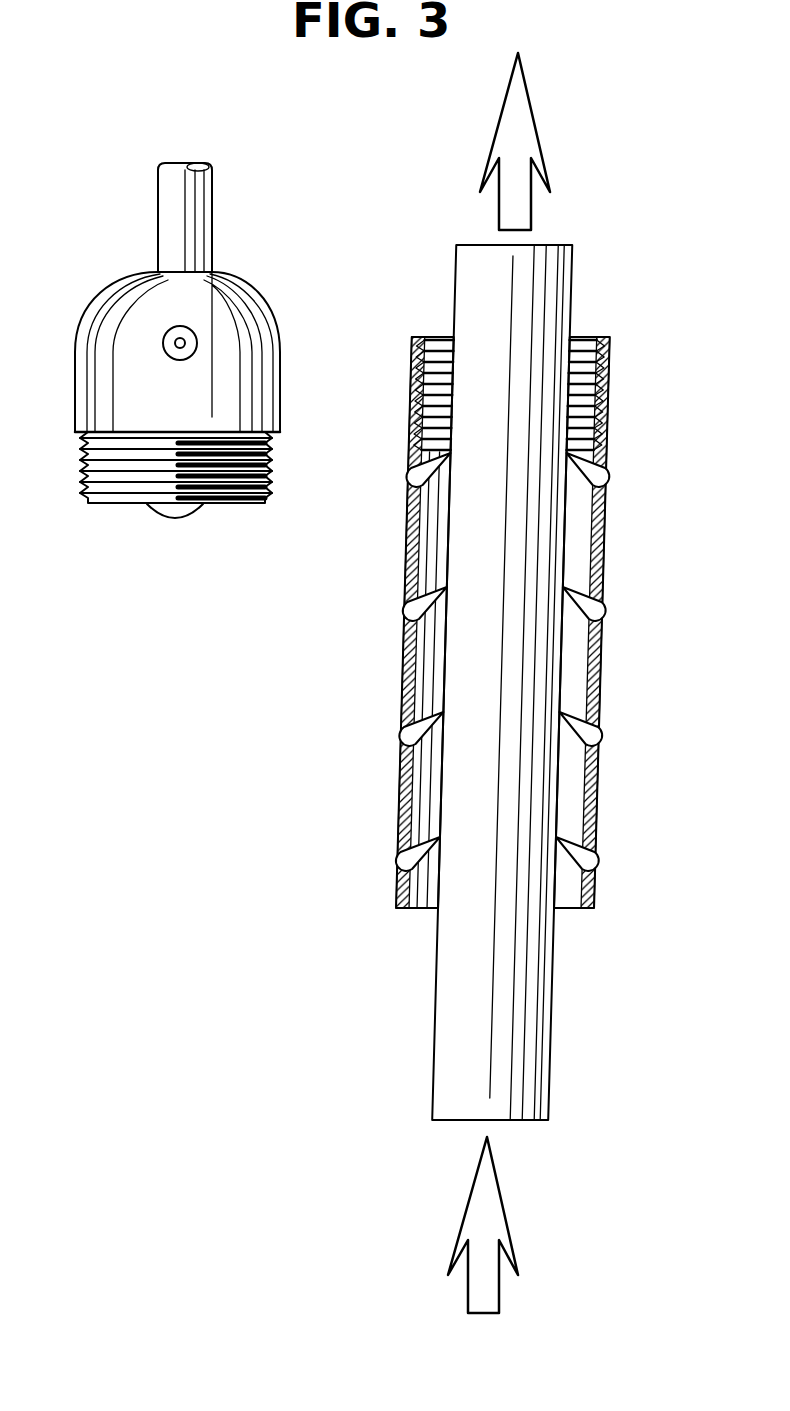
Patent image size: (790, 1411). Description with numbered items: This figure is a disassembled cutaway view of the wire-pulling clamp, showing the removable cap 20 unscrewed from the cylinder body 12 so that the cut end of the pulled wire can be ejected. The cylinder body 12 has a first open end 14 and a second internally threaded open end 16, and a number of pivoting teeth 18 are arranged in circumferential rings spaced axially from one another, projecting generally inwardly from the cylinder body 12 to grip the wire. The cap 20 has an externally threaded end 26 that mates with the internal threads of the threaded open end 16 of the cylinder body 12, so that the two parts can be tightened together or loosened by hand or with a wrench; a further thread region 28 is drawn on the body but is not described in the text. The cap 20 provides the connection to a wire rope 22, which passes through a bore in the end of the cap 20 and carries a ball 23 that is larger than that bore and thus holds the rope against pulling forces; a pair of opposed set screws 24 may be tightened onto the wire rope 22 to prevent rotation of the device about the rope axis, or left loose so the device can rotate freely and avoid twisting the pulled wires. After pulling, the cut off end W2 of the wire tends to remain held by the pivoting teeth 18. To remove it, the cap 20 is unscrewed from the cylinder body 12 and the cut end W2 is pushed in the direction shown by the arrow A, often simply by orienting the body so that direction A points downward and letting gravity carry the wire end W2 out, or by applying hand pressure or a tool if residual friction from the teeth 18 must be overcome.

The cylinder body 12 is at (608, 420).
The first open end 14 is at (408, 910).
The second internally threaded open end 16 is at (440, 337).
The pivoting teeth 18 is at (604, 617).
The removable cap 20 is at (245, 348).
The wire rope 22 is at (208, 212).
The ball 23 is at (177, 510).
The set screws 24 is at (187, 330).
The externally threaded end 26 is at (268, 489).
The external thread 28 is at (587, 337).
The cut off end of wire W2 is at (522, 970).
The arrow A is at (467, 1300).